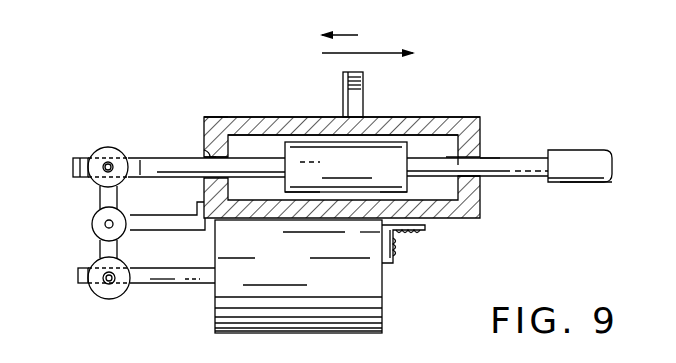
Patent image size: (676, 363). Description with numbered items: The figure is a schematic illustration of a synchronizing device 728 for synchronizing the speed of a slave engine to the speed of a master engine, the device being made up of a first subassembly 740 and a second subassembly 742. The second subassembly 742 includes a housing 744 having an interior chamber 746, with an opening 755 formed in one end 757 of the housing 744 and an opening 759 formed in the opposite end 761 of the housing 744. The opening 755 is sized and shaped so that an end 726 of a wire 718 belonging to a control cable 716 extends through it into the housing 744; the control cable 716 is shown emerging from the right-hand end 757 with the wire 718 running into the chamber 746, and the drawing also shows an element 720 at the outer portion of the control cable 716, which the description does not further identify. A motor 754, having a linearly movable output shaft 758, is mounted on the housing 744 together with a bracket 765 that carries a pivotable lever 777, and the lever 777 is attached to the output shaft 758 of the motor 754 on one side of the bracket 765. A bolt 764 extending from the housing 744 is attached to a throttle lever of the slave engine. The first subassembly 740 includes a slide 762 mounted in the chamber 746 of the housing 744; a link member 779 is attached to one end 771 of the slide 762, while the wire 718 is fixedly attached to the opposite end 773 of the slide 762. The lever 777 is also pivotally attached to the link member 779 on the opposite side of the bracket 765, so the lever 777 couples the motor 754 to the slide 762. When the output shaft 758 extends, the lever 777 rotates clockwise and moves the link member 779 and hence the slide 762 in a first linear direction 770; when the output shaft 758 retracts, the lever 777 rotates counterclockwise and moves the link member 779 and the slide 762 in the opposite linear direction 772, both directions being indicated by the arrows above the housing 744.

The control cable 716 is at (590, 190).
The wire 718 is at (488, 163).
The cylinder 720 is at (582, 160).
The end of wire 726 is at (413, 160).
The synchronizing device 728 is at (416, 254).
The first subassembly 740 is at (268, 145).
The second subassembly 742 is at (492, 108).
The housing 744 is at (432, 117).
The interior chamber 746 is at (229, 116).
The motor 754 is at (298, 276).
The opening 755 is at (482, 172).
The end of housing 757 is at (480, 204).
The output shaft 758 is at (181, 278).
The opening 759 is at (203, 157).
The opposite end of housing 761 is at (203, 142).
The slide 762 is at (346, 167).
The bolt 764 is at (343, 101).
The bracket 765 is at (132, 224).
The first linear direction 770 is at (385, 53).
The end of slide 771 is at (282, 190).
The opposite linear direction 772 is at (402, 33).
The opposite end of slide 773 is at (407, 188).
The lever 777 is at (106, 250).
The link member 779 is at (188, 170).